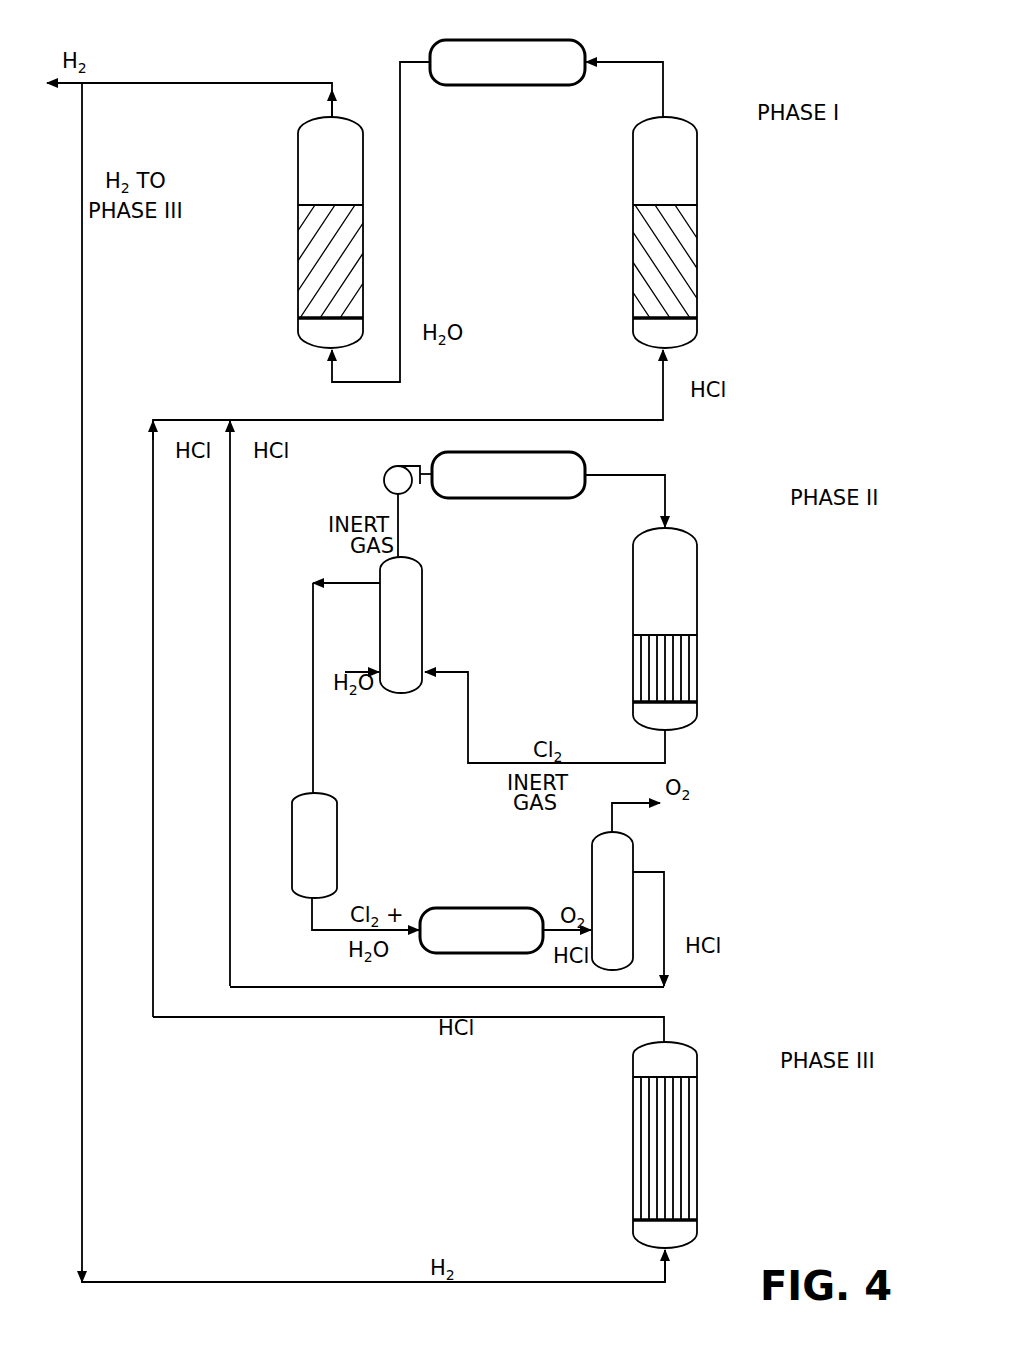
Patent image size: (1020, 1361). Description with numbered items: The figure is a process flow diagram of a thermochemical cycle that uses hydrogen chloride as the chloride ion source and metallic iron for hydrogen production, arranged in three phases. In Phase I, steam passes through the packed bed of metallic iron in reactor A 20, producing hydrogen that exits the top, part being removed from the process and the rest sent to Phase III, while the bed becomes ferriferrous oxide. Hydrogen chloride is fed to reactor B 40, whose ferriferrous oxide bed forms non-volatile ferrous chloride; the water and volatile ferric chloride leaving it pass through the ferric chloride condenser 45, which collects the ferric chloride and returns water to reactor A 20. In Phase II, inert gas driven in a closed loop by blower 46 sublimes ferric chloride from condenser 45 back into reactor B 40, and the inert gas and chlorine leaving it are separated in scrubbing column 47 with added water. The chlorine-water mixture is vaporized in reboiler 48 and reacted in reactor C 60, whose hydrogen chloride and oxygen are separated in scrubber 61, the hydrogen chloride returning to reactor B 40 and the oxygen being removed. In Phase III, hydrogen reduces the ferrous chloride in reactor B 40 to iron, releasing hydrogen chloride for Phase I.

The reactor A 20 is at (300, 331).
The reactor B 40 is at (700, 331).
The ferric chloride condenser 45 is at (582, 46).
The blower 46 is at (394, 466).
The scrubbing column 47 is at (424, 572).
The reboiler 48 is at (338, 801).
The reactor C 60 is at (438, 955).
The scrubber 61 is at (636, 844).